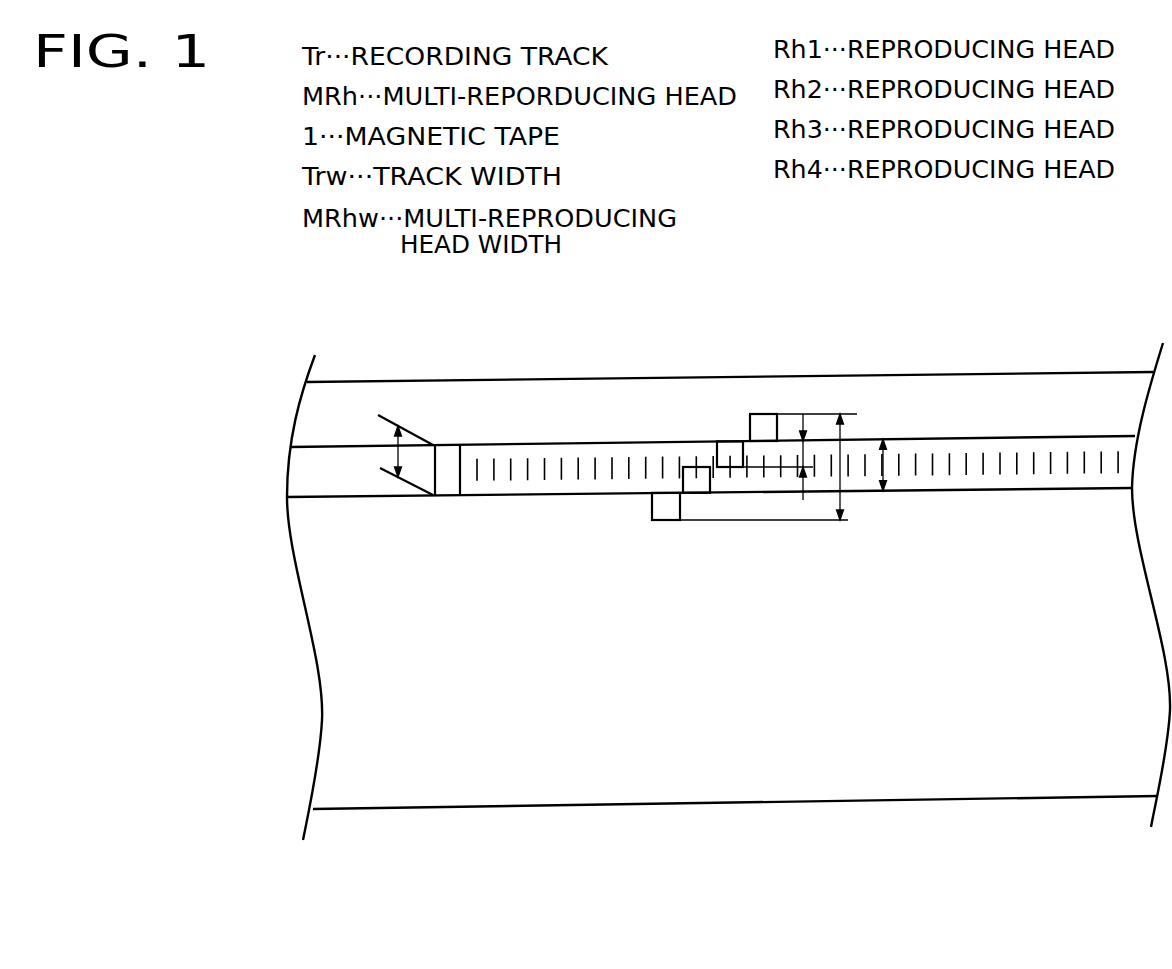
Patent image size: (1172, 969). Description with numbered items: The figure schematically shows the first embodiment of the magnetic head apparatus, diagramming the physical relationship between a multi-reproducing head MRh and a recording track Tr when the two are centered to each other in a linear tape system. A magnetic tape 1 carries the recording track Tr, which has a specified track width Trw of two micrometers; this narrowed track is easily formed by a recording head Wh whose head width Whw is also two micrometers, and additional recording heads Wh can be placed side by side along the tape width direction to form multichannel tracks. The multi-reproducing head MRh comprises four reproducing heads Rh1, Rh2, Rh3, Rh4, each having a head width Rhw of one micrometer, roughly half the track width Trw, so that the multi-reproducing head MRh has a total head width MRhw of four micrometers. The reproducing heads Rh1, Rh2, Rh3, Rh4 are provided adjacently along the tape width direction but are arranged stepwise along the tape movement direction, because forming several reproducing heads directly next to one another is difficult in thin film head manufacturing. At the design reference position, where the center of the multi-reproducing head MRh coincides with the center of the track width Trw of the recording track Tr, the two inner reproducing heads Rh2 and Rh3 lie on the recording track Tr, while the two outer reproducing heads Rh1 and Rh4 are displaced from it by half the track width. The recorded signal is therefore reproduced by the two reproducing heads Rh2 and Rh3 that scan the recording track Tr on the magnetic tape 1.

The magnetic tape 1 is at (1120, 372).
The recording track Tr is at (1008, 443).
The track width Trw is at (885, 460).
The multi-reproducing head MRh is at (785, 325).
The multi-reproducing head width MRhw is at (840, 457).
The reproducing head Rh1 is at (763, 425).
The reproducing head Rh2 is at (728, 452).
The reproducing head Rh3 is at (690, 480).
The reproducing head Rh4 is at (662, 505).
The reproducing head width Rhw is at (805, 452).
The recording head Wh is at (447, 452).
The recording head width Whw is at (397, 450).